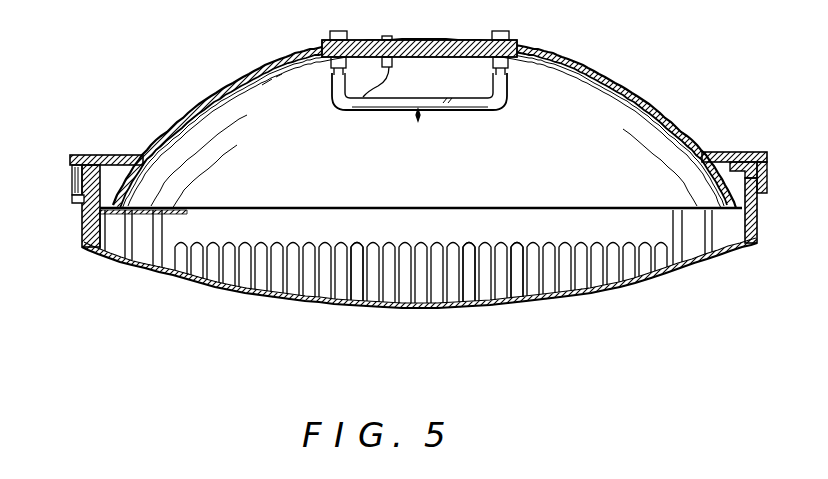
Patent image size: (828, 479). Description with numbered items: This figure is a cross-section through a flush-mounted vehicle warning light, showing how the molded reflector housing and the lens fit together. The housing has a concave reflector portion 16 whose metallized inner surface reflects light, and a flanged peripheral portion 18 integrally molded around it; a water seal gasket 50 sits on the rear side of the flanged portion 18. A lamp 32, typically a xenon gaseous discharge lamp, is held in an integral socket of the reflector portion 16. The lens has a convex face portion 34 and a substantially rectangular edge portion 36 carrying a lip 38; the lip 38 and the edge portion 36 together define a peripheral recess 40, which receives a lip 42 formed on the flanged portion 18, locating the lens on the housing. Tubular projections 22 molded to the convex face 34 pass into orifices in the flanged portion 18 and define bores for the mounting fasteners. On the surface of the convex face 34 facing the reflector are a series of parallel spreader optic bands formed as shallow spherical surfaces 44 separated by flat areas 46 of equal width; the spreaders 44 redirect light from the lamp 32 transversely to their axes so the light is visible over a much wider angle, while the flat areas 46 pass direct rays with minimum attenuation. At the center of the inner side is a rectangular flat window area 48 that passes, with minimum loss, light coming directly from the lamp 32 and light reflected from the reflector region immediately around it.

The concave reflector portion 16 is at (574, 62).
The flanged peripheral portion 18 is at (744, 152).
The tubular projections 22 is at (140, 250).
The lamp 32 is at (470, 111).
The convex face portion 34 is at (607, 288).
The edge portion 36 is at (757, 230).
The lip 38 is at (72, 197).
The peripheral recess 40 is at (72, 176).
The lip 42 is at (762, 171).
The spherical surfaces 44 is at (330, 285).
The flat areas 46 is at (517, 291).
The flat window area 48 is at (365, 305).
The water seal gasket 50 is at (93, 155).